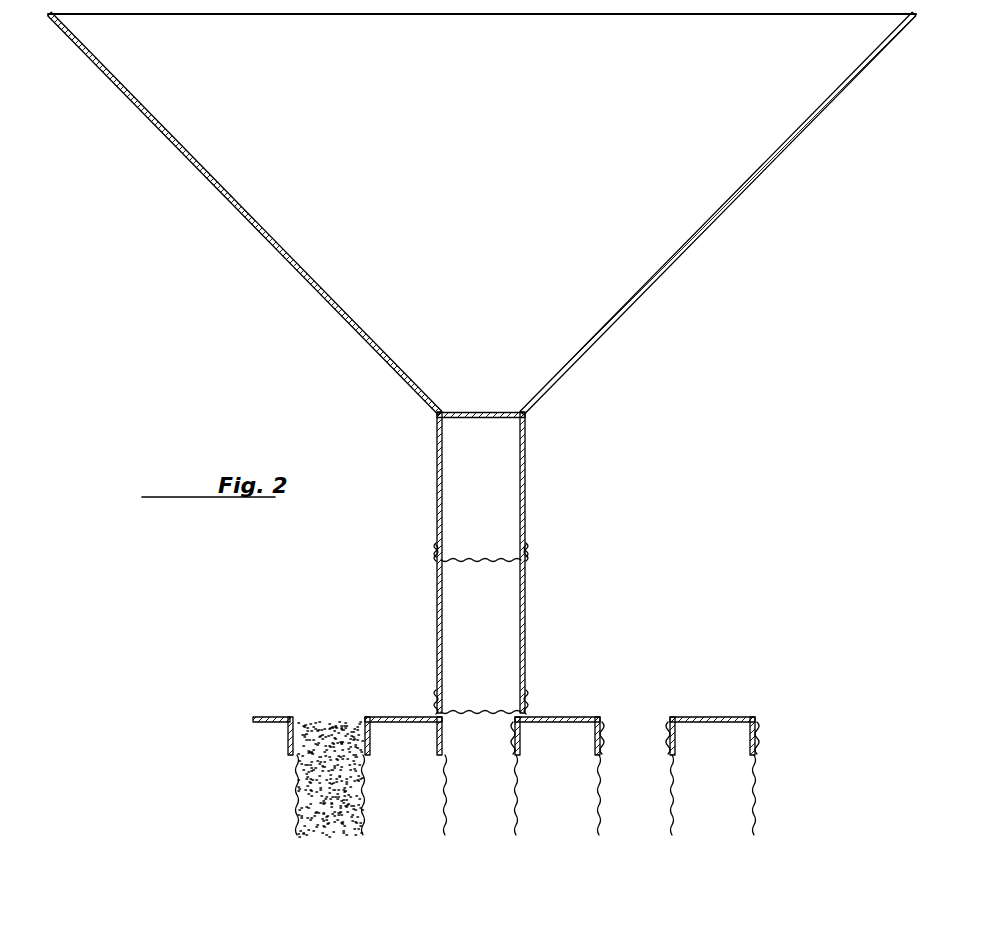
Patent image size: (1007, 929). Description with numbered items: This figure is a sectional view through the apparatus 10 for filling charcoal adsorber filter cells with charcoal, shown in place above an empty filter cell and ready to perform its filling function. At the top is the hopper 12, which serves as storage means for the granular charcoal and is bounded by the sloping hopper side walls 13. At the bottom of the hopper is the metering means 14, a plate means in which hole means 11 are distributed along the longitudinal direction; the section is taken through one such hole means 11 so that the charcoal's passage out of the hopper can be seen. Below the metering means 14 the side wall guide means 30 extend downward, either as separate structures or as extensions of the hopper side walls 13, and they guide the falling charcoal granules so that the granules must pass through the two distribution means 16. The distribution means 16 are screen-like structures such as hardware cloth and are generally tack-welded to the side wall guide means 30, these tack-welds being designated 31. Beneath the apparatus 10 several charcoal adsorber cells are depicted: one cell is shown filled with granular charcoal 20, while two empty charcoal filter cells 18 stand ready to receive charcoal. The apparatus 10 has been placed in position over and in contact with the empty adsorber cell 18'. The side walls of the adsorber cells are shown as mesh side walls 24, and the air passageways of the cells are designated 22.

The apparatus for filling charcoal adsorber filter cells 10 is at (222, 211).
The hole means 11 is at (478, 414).
The hopper 12 is at (652, 210).
The hopper side wall portions 13 is at (297, 273).
The metering means 14 is at (506, 414).
The distribution means 16 is at (472, 558).
The empty charcoal filter cells 18 is at (479, 744).
The empty adsorber cell 18' is at (480, 799).
The granular charcoal 20 is at (325, 720).
The air passageways 22 is at (270, 742).
The mesh side walls 24 is at (294, 783).
The side wall guide means 30 is at (437, 468).
The tack-welds 31 is at (436, 552).